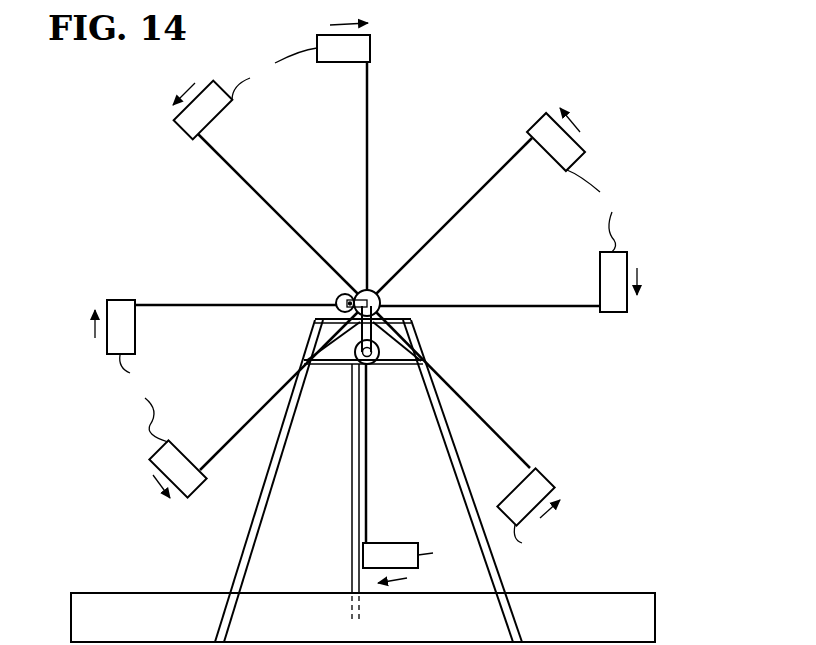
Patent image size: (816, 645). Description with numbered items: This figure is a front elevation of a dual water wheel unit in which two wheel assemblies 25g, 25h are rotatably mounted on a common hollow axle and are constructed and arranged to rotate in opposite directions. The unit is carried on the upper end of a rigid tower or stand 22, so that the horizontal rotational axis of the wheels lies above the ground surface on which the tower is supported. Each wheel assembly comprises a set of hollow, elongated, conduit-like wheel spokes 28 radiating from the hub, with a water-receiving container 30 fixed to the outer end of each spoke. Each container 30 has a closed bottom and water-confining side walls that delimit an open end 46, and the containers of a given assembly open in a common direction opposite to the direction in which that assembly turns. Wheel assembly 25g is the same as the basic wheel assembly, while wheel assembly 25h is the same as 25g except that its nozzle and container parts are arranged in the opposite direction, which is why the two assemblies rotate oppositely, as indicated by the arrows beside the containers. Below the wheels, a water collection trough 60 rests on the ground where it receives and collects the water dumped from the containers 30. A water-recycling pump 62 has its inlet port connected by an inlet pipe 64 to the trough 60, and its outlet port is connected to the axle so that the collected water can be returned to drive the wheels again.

The tower or stand 22 is at (265, 507).
The wheel assembly 25g is at (371, 110).
The wheel assembly 25h is at (238, 160).
The wheel spokes 28 is at (367, 302).
The water-receiving containers 30 is at (332, 63).
The open end 46 is at (371, 306).
The water collection trough 60 is at (620, 595).
The water-recycling pump 62 is at (376, 362).
The inlet pipe 64 is at (352, 393).